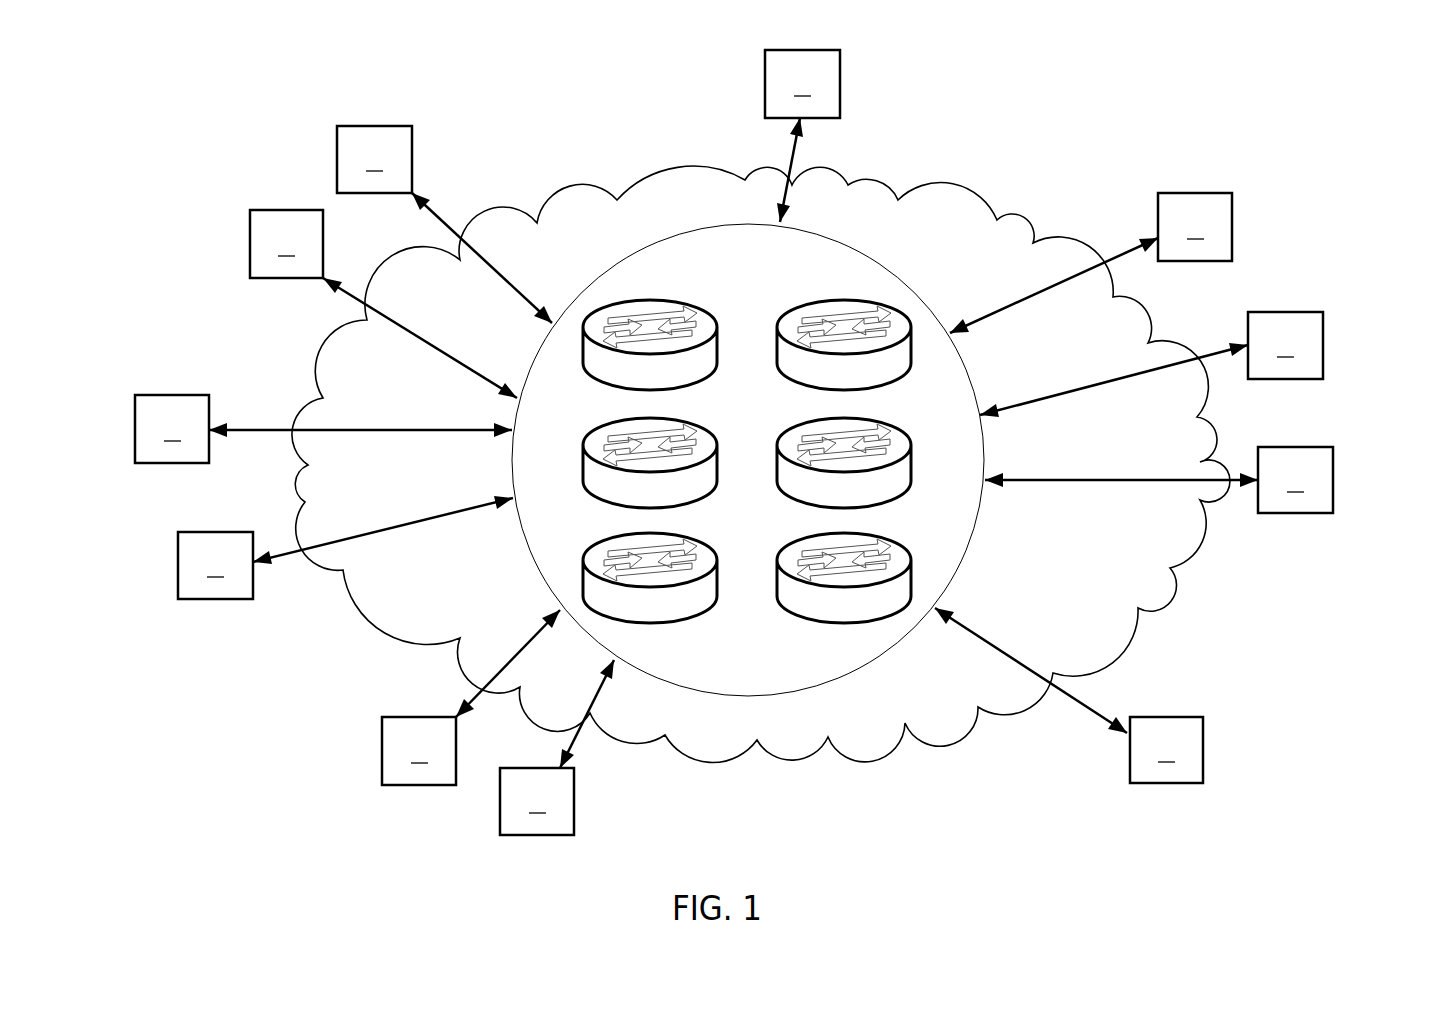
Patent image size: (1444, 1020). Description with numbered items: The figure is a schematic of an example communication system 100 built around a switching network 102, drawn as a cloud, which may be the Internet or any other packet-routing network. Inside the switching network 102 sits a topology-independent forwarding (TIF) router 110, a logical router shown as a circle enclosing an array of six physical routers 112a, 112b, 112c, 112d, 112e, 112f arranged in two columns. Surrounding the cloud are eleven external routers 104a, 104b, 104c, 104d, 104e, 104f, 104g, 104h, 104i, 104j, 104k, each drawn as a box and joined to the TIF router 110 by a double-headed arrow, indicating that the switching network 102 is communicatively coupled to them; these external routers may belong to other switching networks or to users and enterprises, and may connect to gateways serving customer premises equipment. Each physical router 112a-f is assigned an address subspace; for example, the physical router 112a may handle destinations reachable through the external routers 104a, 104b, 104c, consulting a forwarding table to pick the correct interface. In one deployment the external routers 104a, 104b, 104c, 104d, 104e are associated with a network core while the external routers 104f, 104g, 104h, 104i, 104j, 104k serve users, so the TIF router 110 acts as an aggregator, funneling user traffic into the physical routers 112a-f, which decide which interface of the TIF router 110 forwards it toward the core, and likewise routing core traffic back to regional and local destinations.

The communication system 100 is at (145, 79).
The switching network 102 is at (761, 459).
The TIF router 110 is at (748, 460).
The physical router 112a is at (664, 330).
The physical router 112b is at (833, 330).
The physical router 112c is at (659, 452).
The physical router 112d is at (831, 452).
The physical router 112e is at (659, 567).
The physical router 112f is at (836, 567).
The external router 104a is at (832, 70).
The external router 104b is at (1240, 213).
The external router 104c is at (1330, 331).
The external router 104d is at (1341, 465).
The external router 104e is at (1212, 735).
The external router 104f is at (495, 816).
The external router 104g is at (374, 735).
The external router 104h is at (189, 552).
The external router 104i is at (148, 416).
The external router 104j is at (245, 230).
The external router 104k is at (399, 145).